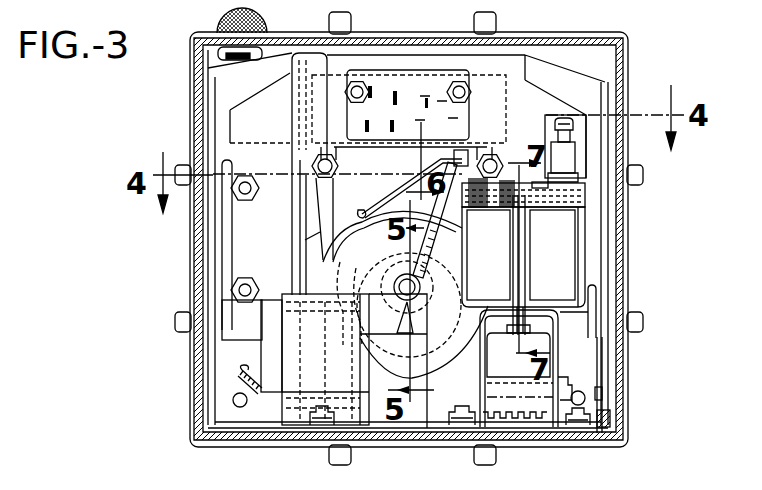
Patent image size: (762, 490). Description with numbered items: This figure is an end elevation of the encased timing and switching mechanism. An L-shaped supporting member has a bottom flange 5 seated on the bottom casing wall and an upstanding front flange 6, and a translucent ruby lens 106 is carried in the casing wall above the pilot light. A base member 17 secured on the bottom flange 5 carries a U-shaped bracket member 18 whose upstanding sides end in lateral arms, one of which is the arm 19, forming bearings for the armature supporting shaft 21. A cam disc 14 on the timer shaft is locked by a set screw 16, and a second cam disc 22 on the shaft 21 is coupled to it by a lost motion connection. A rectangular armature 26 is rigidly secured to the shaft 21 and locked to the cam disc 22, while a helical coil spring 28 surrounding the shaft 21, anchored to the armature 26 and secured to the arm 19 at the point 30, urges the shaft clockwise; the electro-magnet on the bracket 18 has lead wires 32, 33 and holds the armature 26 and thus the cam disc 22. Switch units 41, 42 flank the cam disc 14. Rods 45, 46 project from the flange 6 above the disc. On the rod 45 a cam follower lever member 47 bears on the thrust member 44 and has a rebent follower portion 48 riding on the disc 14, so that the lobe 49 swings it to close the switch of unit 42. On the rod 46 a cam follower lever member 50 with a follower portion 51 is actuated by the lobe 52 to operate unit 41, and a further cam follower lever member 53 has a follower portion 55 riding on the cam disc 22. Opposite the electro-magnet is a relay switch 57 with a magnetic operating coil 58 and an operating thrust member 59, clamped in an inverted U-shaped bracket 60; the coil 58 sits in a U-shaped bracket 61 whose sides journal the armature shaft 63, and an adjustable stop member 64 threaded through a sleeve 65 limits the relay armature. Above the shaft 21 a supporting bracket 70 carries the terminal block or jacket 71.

The bottom flange 5 is at (248, 424).
The front flange 6 is at (205, 72).
The translucent ruby lens 106 is at (217, 18).
The supporting bracket 70 is at (315, 53).
The terminal block or jacket 71 is at (380, 70).
The set screw 16 is at (446, 132).
The thrust member 44 is at (305, 210).
The cam follower lever member 47 is at (305, 240).
The rod or post 45 is at (325, 153).
The rod 46 is at (490, 153).
The cam disc 14 is at (350, 227).
The cam or lobe 49 is at (392, 236).
The cam follower lever member 53 is at (402, 185).
The follower portion 55 is at (362, 208).
The armature 26 is at (435, 220).
The armature supporting shaft 21 is at (408, 275).
The helical coil spring 28 is at (415, 305).
The spring anchorage 30 is at (408, 328).
The rebent cam follower portion 48 is at (372, 262).
The lateral arm 19 is at (380, 293).
The cam or lobe 52 is at (408, 378).
The U-shaped bracket member 18 is at (283, 373).
The switch unit 42 is at (230, 310).
The lead wire 33 is at (248, 372).
The lead wire 32 is at (252, 390).
The base member 17 is at (281, 418).
The cam disc 22 is at (443, 378).
The adjustable stop member 64 is at (560, 118).
The sleeve 65 is at (563, 157).
The cam follower lever member 50 is at (517, 227).
The armature shaft 63 is at (565, 208).
The follower portion 51 is at (527, 283).
The magnetic operating coil 58 is at (580, 272).
The U-shaped bracket 61 is at (585, 290).
The switch unit 41 is at (585, 318).
The operating thrust member 59 is at (525, 326).
The inverted U-shaped bracket 60 is at (559, 352).
The relay switch 57 is at (548, 380).